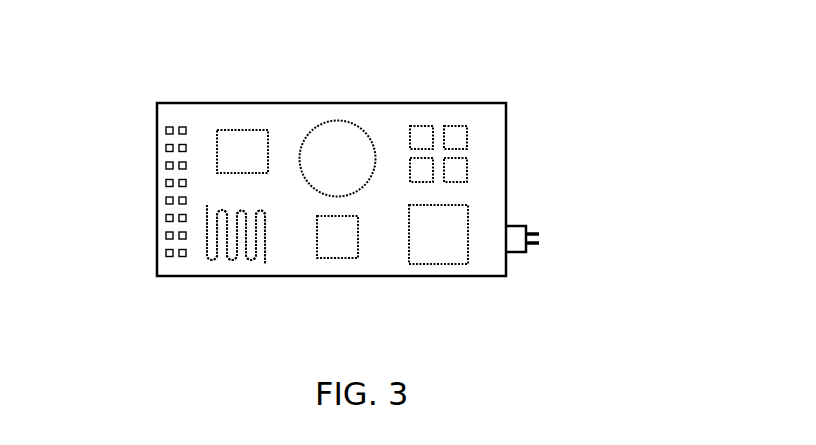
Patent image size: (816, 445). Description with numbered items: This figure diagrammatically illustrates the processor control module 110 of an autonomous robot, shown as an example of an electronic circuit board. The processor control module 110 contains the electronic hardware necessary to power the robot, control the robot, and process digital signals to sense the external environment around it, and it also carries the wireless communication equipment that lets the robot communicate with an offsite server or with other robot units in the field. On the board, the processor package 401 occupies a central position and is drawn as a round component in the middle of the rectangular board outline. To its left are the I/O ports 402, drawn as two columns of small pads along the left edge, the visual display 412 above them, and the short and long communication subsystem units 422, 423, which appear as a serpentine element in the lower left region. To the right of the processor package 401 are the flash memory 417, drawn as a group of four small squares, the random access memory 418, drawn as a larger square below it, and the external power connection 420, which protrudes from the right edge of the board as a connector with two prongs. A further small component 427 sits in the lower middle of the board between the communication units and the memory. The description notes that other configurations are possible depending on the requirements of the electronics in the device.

The processor control module 110 is at (560, 127).
The processor package 401 is at (333, 122).
The I/O ports 402 is at (158, 130).
The visual display 412 is at (227, 128).
The flash memory 417 is at (427, 126).
The random access memory 418 is at (443, 275).
The external power connection 420 is at (545, 240).
The short communication subsystem unit 422 is at (237, 275).
The long communication subsystem unit 423 is at (236, 234).
The component 427 is at (333, 275).